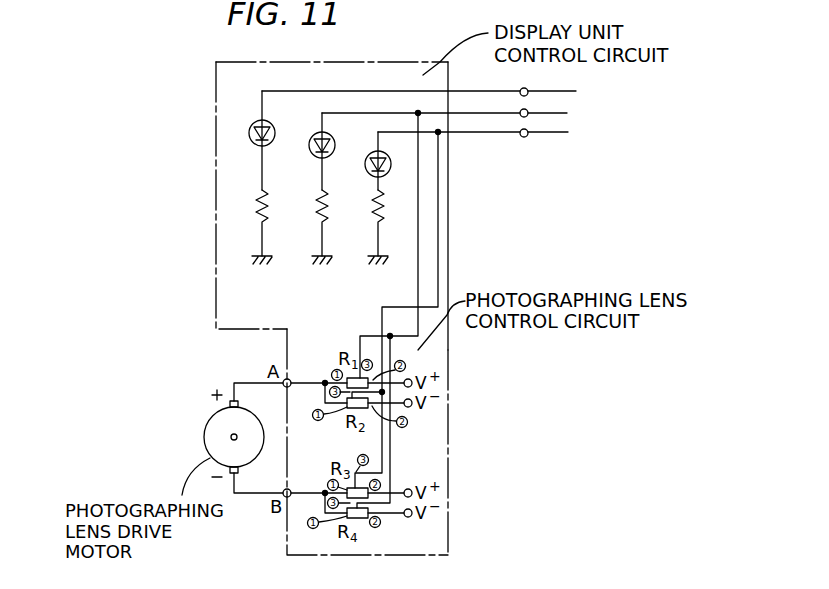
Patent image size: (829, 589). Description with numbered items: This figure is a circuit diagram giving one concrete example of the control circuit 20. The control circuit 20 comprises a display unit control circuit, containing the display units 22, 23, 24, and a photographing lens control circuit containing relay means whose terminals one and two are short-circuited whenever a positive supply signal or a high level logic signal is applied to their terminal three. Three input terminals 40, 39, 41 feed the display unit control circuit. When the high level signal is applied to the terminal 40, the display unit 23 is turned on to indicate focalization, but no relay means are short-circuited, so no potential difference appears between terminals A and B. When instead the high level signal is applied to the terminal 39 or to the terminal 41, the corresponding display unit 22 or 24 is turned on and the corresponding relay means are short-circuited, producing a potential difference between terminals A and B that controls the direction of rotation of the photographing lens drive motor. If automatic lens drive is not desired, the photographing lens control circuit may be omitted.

The control circuit 20 is at (228, 283).
The display unit 22 is at (341, 130).
The display unit 23 is at (273, 137).
The display unit 24 is at (389, 169).
The terminal 39 is at (529, 111).
The terminal 40 is at (528, 89).
The terminal 41 is at (528, 136).